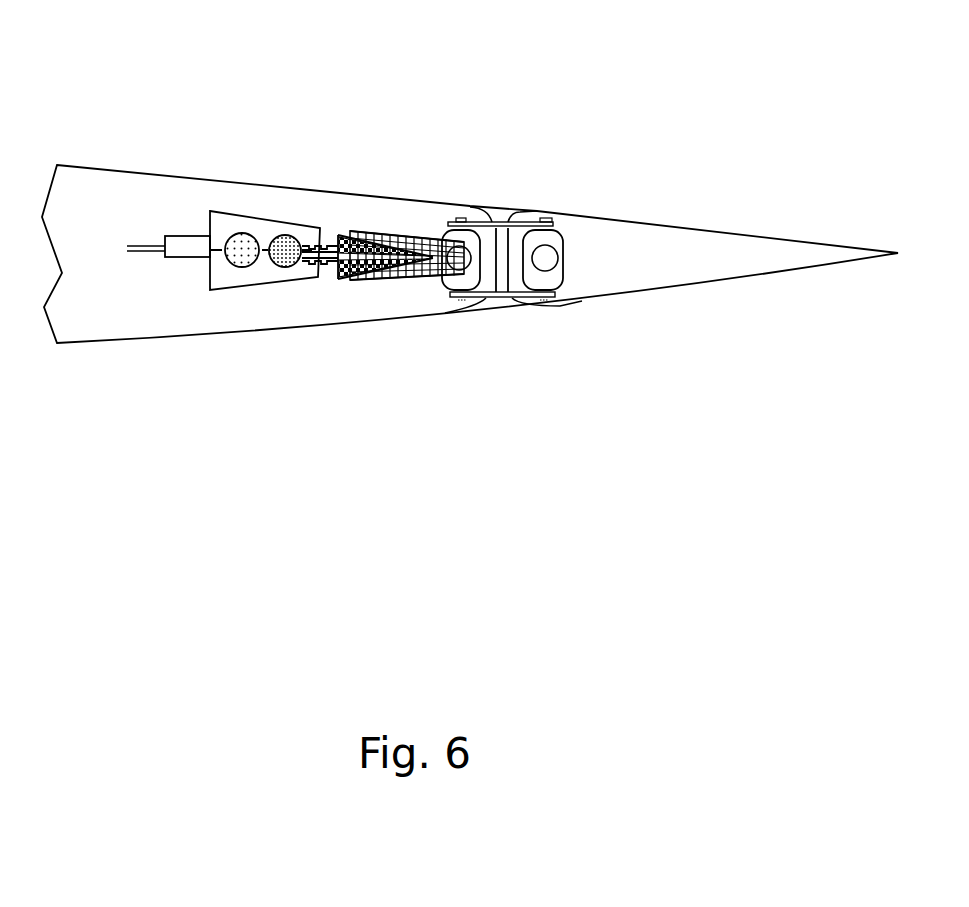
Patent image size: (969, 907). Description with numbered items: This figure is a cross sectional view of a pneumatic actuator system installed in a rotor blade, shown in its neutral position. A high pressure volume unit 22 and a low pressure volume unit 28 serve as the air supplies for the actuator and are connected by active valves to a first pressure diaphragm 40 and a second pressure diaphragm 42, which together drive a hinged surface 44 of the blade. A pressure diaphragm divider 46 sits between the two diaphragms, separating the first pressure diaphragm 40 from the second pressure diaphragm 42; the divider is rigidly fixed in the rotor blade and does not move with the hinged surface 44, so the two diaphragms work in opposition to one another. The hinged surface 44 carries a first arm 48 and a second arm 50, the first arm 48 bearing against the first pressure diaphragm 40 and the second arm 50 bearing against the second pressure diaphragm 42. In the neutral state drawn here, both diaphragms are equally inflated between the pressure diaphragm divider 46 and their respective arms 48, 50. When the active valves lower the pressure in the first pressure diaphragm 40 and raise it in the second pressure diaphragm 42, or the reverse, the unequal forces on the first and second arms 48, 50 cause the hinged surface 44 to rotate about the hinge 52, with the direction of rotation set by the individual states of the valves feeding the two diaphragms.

The high pressure volume unit 22 is at (282, 235).
The low pressure volume unit 28 is at (238, 233).
The first pressure diaphragm 40 is at (333, 275).
The second pressure diaphragm 42 is at (345, 237).
The hinged surface 44 is at (697, 236).
The pressure diaphragm divider 46 is at (405, 238).
The first arm 48 is at (412, 268).
The second arm 50 is at (383, 238).
The hinge 52 is at (465, 265).